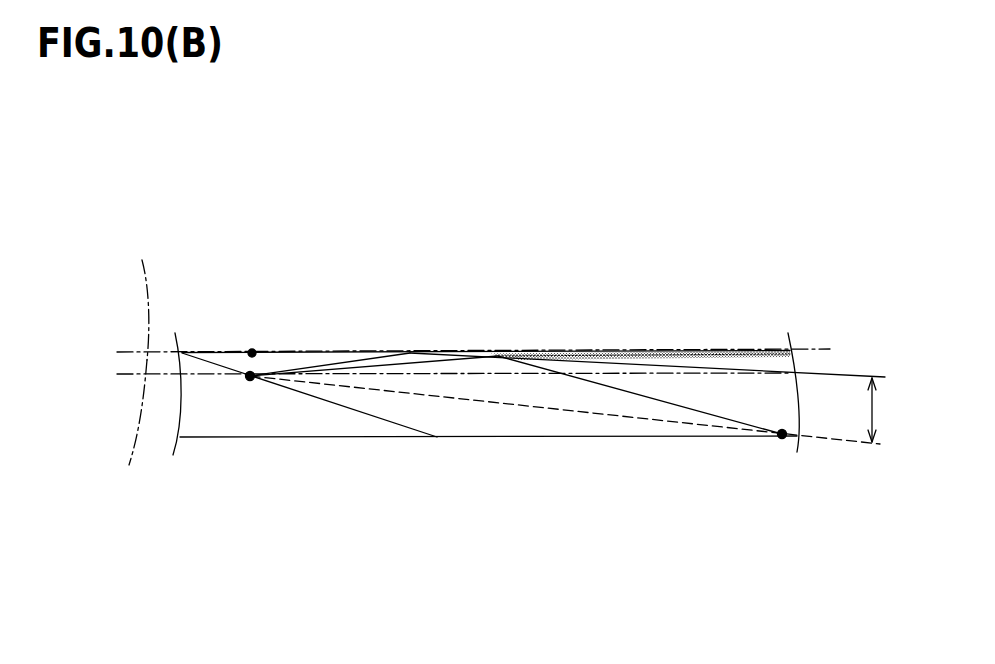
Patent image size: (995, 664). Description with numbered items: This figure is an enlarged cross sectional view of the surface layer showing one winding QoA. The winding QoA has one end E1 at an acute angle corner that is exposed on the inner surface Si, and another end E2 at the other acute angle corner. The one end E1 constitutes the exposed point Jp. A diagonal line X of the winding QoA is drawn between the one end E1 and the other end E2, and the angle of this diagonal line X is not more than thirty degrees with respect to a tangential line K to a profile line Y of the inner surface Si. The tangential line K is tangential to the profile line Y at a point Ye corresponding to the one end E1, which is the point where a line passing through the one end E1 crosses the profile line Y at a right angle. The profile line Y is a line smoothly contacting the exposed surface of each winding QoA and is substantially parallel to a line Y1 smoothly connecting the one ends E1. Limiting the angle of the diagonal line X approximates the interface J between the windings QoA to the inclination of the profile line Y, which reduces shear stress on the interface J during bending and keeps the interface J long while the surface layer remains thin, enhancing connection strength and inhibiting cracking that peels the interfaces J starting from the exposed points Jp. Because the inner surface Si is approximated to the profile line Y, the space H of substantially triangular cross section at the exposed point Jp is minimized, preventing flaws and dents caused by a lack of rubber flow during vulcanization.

The profile line Y is at (137, 294).
The line smoothly connecting the one ends Y1 is at (124, 429).
The point on the profile line Ye is at (249, 342).
The one end of the winding E1 is at (318, 307).
The exposed point Jp is at (258, 371).
The space H is at (550, 353).
The inner surface Si is at (643, 353).
The tangential line K is at (853, 352).
The interface J is at (343, 408).
The winding QoA is at (457, 413).
The diagonal line X is at (570, 410).
The other end of the winding E2 is at (778, 441).